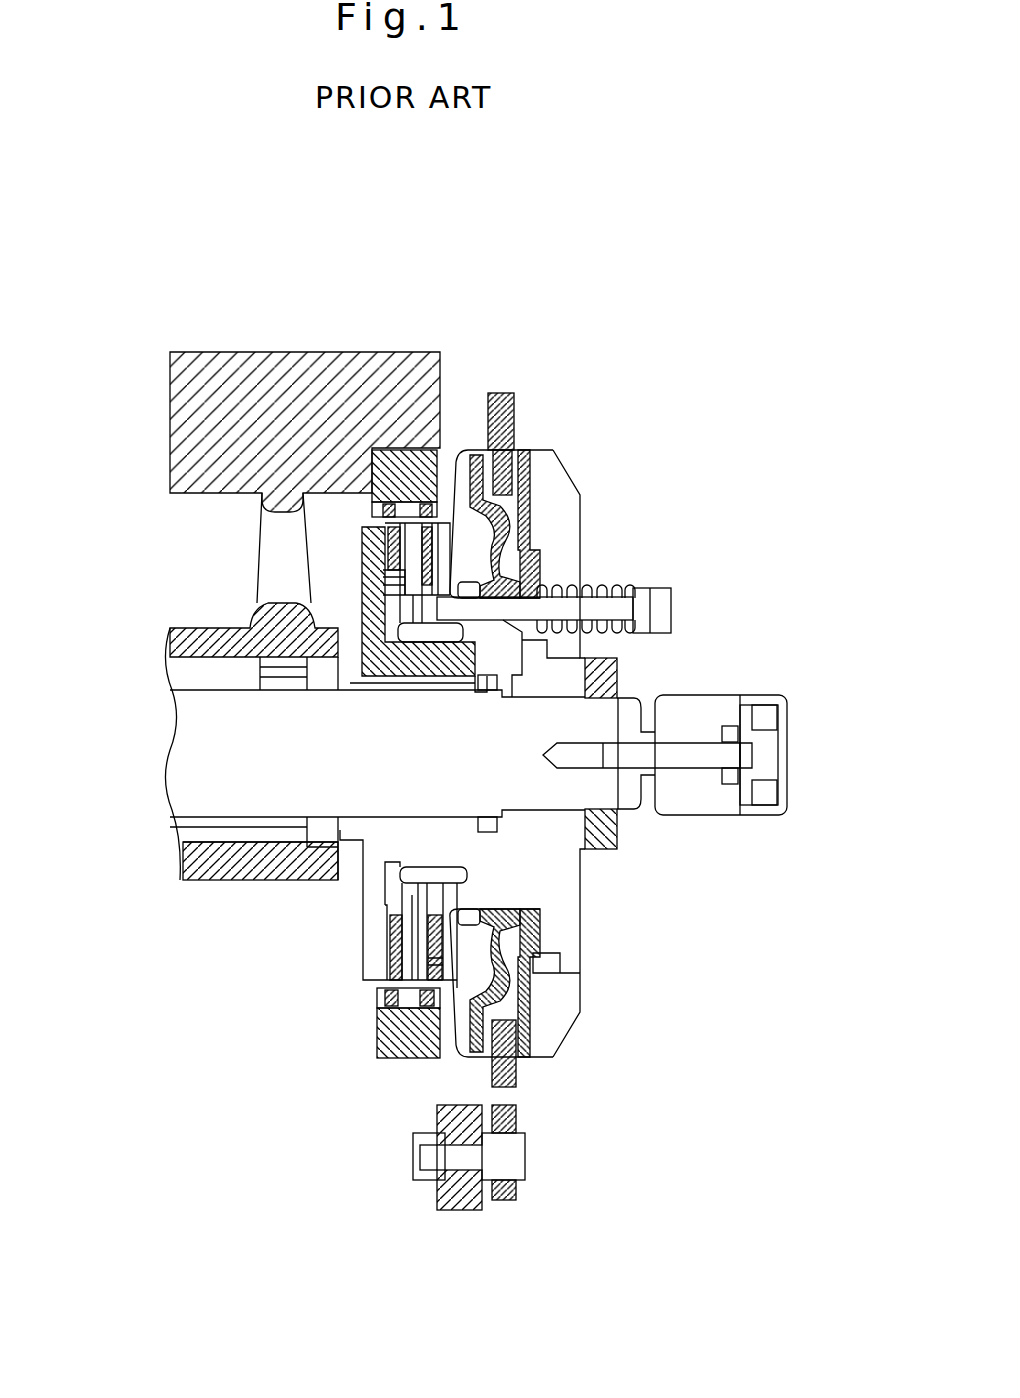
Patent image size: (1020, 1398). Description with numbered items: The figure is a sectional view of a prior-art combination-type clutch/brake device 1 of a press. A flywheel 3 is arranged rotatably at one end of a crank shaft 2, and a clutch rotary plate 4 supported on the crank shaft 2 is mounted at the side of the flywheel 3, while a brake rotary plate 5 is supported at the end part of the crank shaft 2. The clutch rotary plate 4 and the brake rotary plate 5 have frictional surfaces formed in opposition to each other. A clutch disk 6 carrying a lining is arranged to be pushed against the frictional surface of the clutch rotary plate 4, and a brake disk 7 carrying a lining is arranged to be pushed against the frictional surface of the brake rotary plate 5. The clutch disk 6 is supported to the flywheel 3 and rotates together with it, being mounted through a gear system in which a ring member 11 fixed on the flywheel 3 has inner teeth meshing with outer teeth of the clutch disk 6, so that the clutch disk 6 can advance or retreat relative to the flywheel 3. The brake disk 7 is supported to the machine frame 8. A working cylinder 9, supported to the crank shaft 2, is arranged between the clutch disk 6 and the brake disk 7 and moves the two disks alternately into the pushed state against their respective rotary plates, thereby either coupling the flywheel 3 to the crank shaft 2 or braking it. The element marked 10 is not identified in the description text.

The clutch/brake device 1 is at (538, 308).
The crank shaft 2 is at (293, 760).
The flywheel 3 is at (258, 388).
The clutch rotary plate 4 is at (372, 618).
The brake rotary plate 5 is at (532, 537).
The clutch disk 6 is at (420, 570).
The brake disk 7 is at (513, 413).
The machine frame 8 is at (462, 1192).
The working cylinder 9 is at (510, 577).
The set bolt with spring 10 is at (635, 587).
The ring member 11 is at (408, 440).